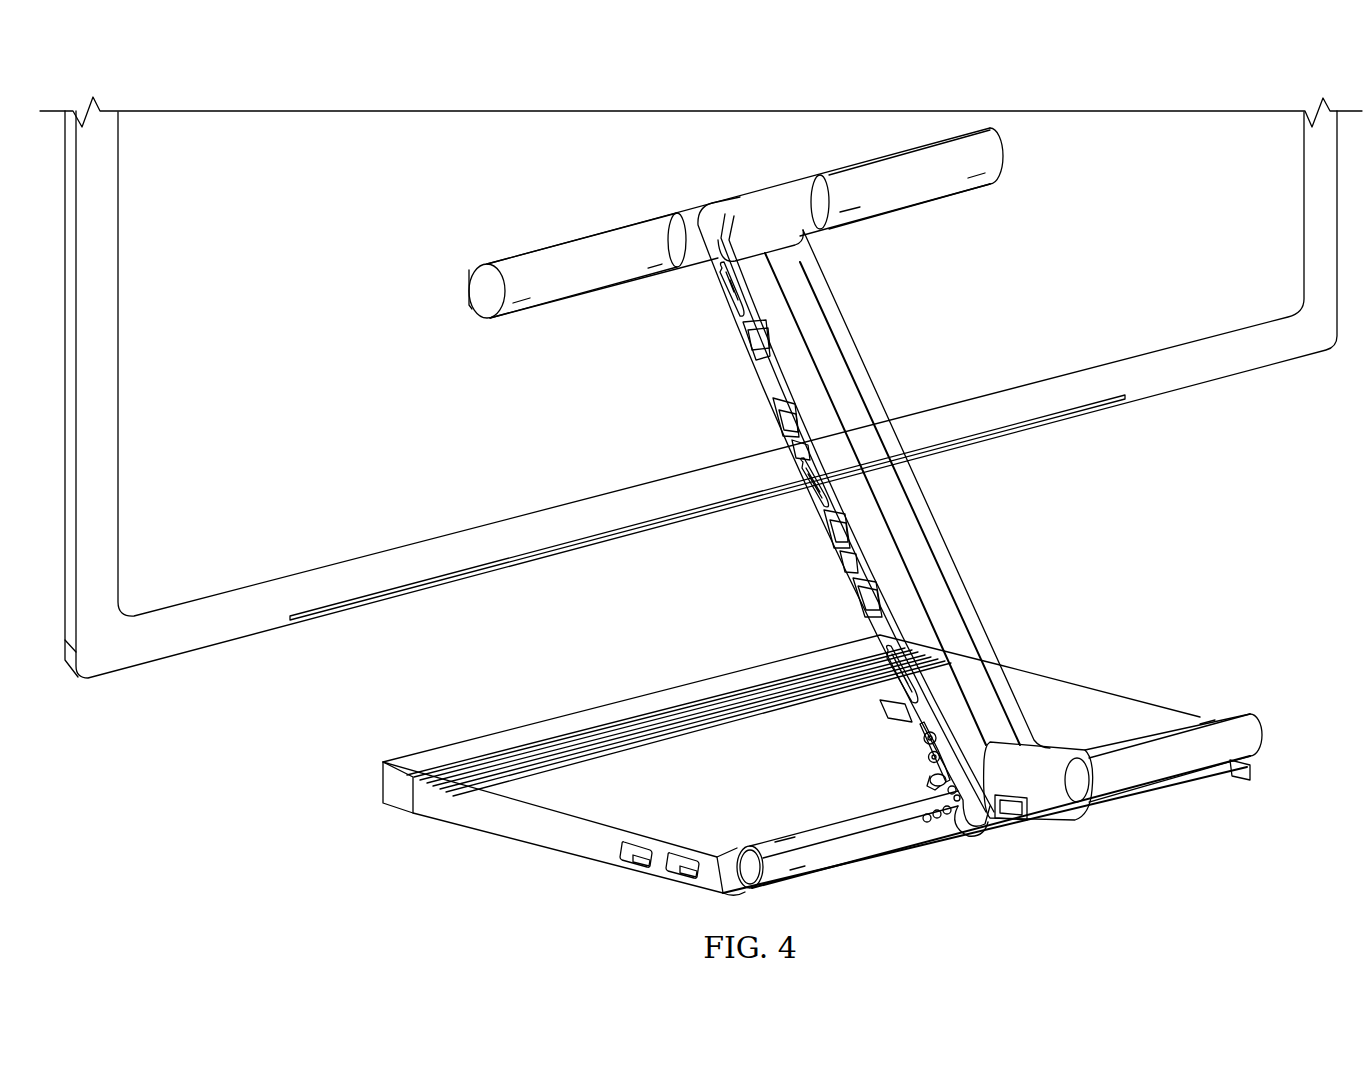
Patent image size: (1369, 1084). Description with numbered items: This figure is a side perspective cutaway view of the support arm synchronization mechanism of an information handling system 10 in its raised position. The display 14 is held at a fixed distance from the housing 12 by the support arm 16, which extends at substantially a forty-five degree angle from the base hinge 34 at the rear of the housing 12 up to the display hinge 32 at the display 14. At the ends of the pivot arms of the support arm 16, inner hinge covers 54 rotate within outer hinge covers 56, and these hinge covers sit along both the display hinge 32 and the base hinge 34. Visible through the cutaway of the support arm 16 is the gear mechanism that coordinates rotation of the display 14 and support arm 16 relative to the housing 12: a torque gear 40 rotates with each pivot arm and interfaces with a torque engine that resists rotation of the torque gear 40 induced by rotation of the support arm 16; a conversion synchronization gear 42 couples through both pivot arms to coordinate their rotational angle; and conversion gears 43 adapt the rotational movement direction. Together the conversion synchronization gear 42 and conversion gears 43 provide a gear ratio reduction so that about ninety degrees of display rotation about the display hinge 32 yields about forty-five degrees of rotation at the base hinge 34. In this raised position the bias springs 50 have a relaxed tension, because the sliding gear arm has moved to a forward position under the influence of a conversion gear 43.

The computing device 10 is at (440, 98).
The housing 12 is at (465, 830).
The display 14 is at (280, 116).
The support arm 16 is at (953, 562).
The display hinge 32 is at (560, 241).
The base hinge 34 is at (912, 848).
The torque gear 40 is at (956, 824).
The conversion synchronization gear 42 is at (932, 783).
The conversion gears 43 is at (924, 740).
The bias springs 50 is at (858, 597).
The inner hinge covers 54 is at (797, 833).
The outer hinge covers 56 is at (927, 208).